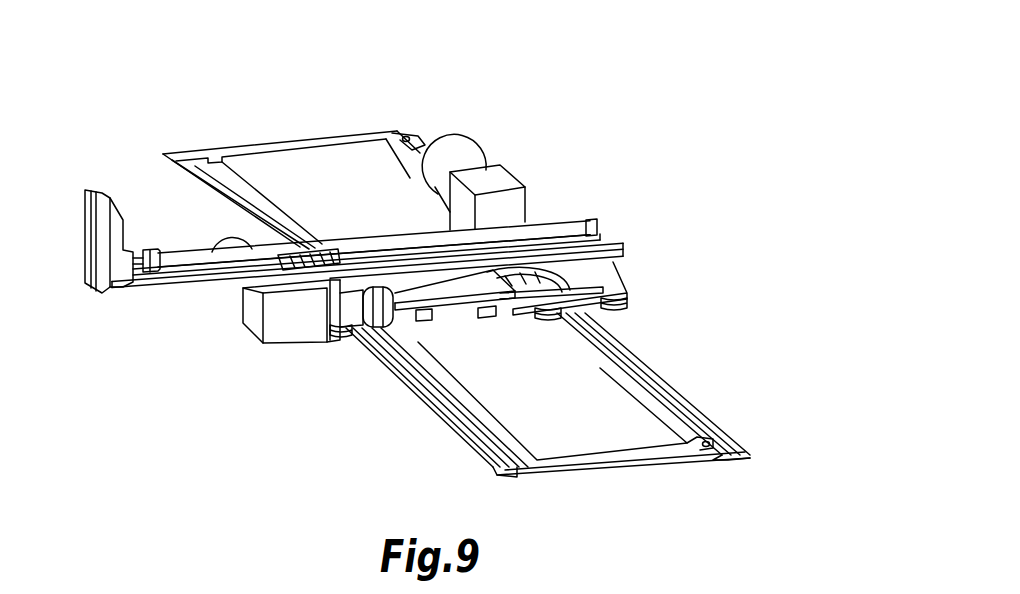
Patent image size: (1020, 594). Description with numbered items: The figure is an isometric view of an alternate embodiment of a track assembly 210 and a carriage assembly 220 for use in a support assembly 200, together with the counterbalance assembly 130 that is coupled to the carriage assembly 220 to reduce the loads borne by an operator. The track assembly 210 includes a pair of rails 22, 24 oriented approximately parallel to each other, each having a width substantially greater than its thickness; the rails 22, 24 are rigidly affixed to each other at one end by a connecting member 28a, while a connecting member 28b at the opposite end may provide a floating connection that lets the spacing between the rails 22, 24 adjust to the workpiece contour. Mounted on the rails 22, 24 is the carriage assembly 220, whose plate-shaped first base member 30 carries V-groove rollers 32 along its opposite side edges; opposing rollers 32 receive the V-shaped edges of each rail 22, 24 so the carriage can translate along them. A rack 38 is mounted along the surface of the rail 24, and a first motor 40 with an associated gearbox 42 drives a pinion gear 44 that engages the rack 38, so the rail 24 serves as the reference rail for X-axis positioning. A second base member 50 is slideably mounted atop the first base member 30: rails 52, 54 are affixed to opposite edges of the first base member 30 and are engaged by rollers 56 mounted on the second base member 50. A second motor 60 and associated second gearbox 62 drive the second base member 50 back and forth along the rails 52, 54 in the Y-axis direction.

The support assembly 200 is at (556, 99).
The track assembly 210 is at (252, 108).
The carriage assembly 220 is at (650, 217).
The counterbalance assembly 130 is at (138, 184).
The rail 22 is at (672, 370).
The rail 24 is at (450, 436).
The connecting member 28a is at (344, 135).
The connecting member 28b is at (640, 460).
The first base member 30 is at (597, 275).
The rollers 32 is at (341, 340).
The rack 38 is at (495, 437).
The first motor 40 is at (220, 243).
The gearbox 42 is at (250, 325).
The pinion gear 44 is at (383, 333).
The second base member 50 is at (368, 235).
The rail 52 is at (520, 308).
The rail 54 is at (307, 250).
The rollers 56 is at (462, 315).
The second motor 60 is at (470, 150).
The second gearbox 62 is at (512, 178).